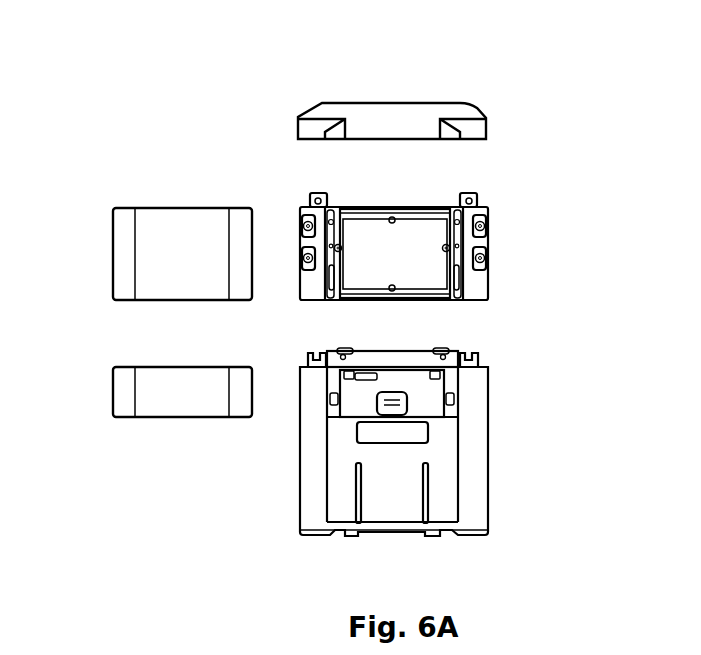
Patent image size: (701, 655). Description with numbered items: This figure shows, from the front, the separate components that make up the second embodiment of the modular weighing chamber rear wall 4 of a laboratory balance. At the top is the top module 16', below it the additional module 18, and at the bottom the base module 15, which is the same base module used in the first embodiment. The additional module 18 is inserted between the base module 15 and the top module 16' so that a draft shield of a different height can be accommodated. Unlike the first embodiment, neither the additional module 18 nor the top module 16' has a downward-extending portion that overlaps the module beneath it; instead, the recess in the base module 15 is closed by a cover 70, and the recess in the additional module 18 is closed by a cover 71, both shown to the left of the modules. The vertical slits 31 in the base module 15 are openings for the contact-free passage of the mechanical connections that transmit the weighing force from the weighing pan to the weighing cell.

The weighing chamber rear wall 4 is at (217, 113).
The top module 16' is at (460, 121).
The additional module 18 is at (492, 253).
The cover 71 is at (112, 255).
The cover 70 is at (112, 392).
The base module 15 is at (463, 462).
The vertical slits 31 is at (420, 490).